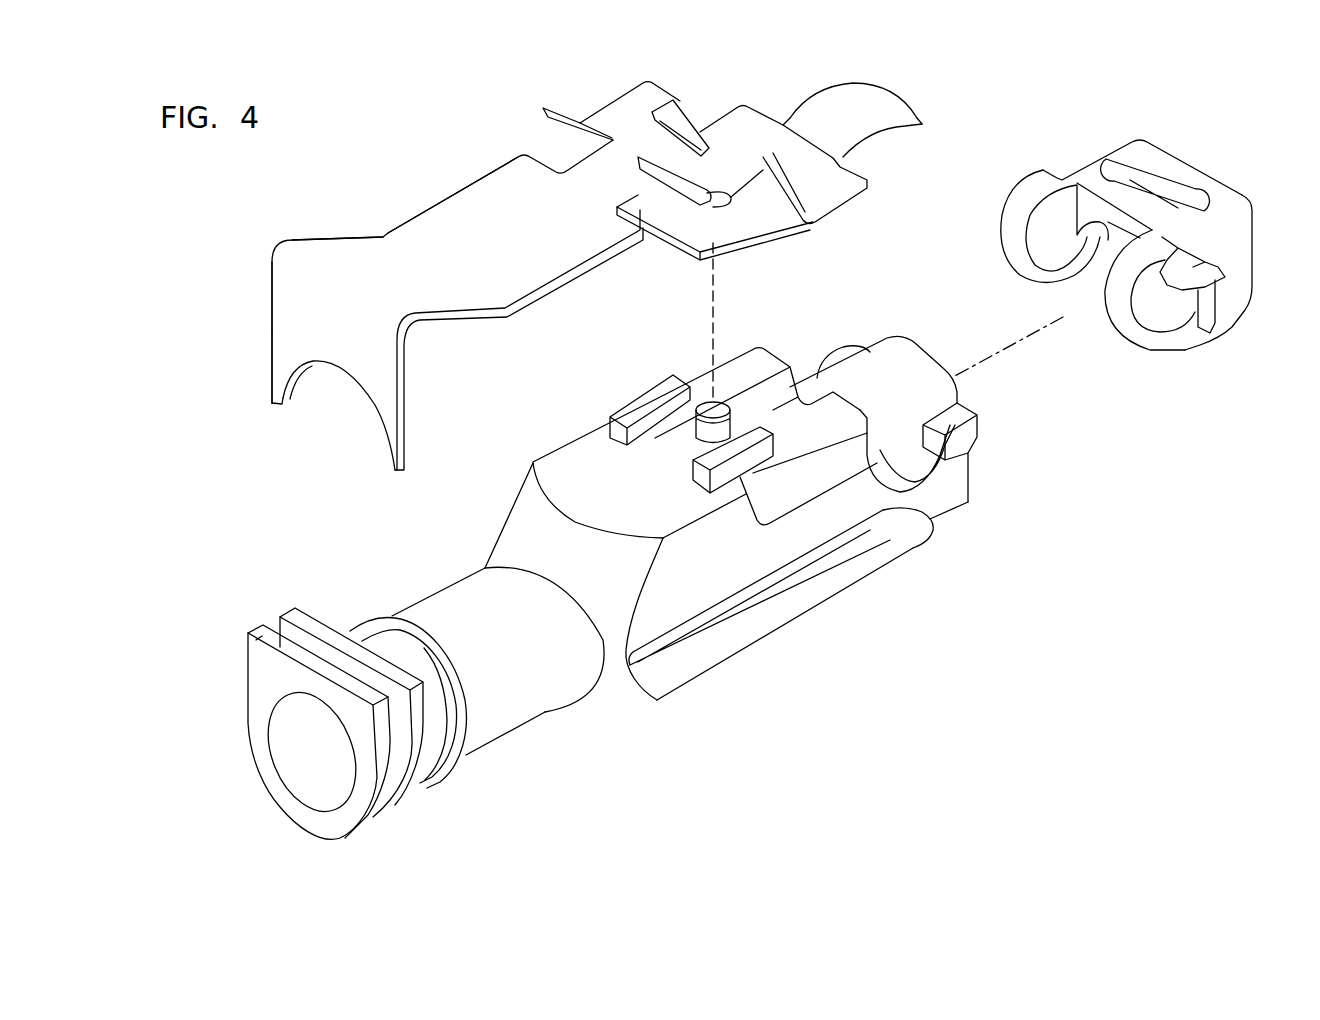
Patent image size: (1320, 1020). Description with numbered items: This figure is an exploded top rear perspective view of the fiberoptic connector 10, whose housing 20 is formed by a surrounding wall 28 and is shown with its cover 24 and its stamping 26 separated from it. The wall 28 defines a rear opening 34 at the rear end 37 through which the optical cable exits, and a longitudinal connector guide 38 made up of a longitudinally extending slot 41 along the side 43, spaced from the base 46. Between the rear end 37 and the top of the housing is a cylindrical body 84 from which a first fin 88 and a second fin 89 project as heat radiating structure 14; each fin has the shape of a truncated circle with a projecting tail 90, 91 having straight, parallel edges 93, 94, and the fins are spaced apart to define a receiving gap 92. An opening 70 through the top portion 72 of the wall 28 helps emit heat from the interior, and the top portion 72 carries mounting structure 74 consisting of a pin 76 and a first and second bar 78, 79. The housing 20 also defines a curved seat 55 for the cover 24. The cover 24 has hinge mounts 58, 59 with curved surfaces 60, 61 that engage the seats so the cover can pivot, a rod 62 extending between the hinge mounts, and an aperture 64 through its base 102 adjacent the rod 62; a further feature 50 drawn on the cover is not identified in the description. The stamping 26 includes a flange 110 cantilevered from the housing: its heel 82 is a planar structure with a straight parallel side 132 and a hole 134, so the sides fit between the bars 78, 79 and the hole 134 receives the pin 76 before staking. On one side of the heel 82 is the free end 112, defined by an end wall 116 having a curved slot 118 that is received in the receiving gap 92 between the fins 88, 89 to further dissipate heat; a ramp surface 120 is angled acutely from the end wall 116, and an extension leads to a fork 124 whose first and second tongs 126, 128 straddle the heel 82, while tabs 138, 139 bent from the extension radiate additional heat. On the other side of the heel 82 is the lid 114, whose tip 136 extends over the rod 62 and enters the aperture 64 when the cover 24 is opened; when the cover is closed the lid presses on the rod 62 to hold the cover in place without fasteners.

The fiberoptic connector 10 is at (420, 141).
The heat radiating structure 14 is at (235, 562).
The connector housing 20 is at (505, 509).
The cover 24 is at (1255, 262).
The stamping 26 is at (476, 183).
The surrounding wall 28 is at (524, 720).
The rear opening 34 is at (330, 802).
The rear end 37 is at (247, 731).
The longitudinal connector guide 38 is at (845, 641).
The slot 41 is at (718, 608).
The side 43 is at (689, 668).
The base 46 is at (862, 578).
The latch tab 50 is at (1185, 273).
The curved seat 55 is at (900, 484).
The hinge mount 58 is at (997, 250).
The hinge mount 59 is at (1148, 350).
The curved surface 60 is at (1017, 273).
The curved surface 61 is at (1110, 332).
The rod 62 is at (1115, 225).
The aperture 64 is at (1122, 162).
The opening 70 is at (773, 369).
The top portion 72 is at (742, 362).
The mounting structure 74 is at (598, 371).
The pin 76 is at (694, 430).
The first bar 78 is at (609, 411).
The second bar 79 is at (692, 474).
The heel 82 is at (683, 228).
The cylindrical body 84 is at (430, 586).
The first fin 88 is at (422, 786).
The second fin 89 is at (368, 820).
The projecting tail 90 is at (311, 610).
The projecting tail 91 is at (258, 636).
The receiving gap 92 is at (396, 796).
The straight parallel edge 93 is at (319, 614).
The straight parallel edge 94 is at (269, 648).
The base 102 is at (1214, 199).
The flange 110 is at (400, 232).
The free end 112 is at (271, 338).
The lid 114 is at (840, 88).
The end wall 116 is at (271, 285).
The curved slot 118 is at (318, 366).
The ramp surface 120 is at (338, 237).
The fork 124 is at (625, 90).
The first tong 126 is at (795, 168).
The second tong 128 is at (689, 110).
The straight parallel side 132 is at (740, 222).
The aperture 134 is at (708, 203).
The tip 136 is at (893, 100).
The tab 138 is at (541, 107).
The tab 139 is at (636, 160).